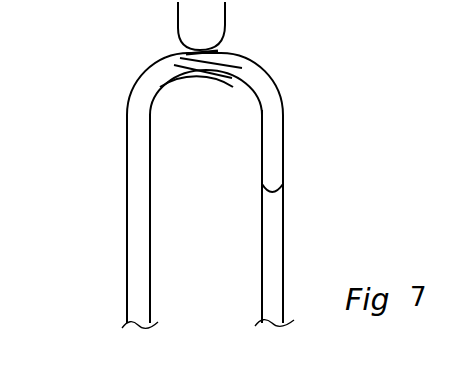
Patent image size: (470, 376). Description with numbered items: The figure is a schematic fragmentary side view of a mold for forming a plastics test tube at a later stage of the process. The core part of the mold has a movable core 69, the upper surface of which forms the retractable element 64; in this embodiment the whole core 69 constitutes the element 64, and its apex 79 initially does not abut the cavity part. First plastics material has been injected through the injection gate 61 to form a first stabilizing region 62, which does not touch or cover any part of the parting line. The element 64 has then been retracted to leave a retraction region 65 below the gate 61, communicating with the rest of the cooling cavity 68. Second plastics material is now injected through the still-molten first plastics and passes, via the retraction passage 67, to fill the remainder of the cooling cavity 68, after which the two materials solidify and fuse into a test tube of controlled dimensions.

The injection gate 61 is at (190, 60).
The first stabilizing region 62 is at (270, 147).
The retractable element 64 is at (205, 188).
The retraction region 65 is at (190, 58).
The retraction passage 67 is at (216, 71).
The cooling cavity 68 is at (140, 218).
The movable core 69 is at (206, 213).
The apex of the core 79 is at (233, 87).